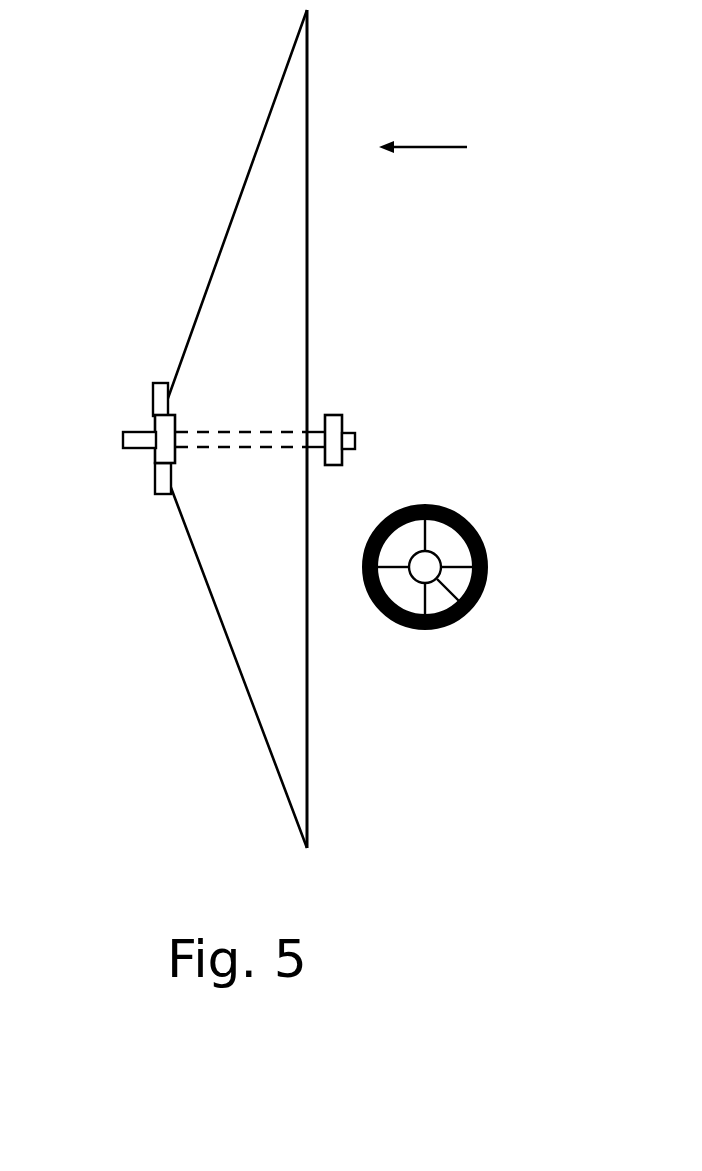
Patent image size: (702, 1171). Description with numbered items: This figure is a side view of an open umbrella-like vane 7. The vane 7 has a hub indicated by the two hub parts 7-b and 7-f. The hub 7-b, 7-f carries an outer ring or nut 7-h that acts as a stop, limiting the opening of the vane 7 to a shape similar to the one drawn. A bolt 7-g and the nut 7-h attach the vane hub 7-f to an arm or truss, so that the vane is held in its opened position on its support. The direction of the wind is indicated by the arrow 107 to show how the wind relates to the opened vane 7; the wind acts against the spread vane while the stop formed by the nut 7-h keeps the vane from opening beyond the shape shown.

The umbrella-like vane 7 is at (313, 260).
The direction of travel arrow 107 is at (423, 131).
The hub 7-b is at (155, 455).
The vane hub 7-f is at (337, 413).
The bolt 7-g is at (135, 431).
The outer ring or nut 7-h is at (163, 497).